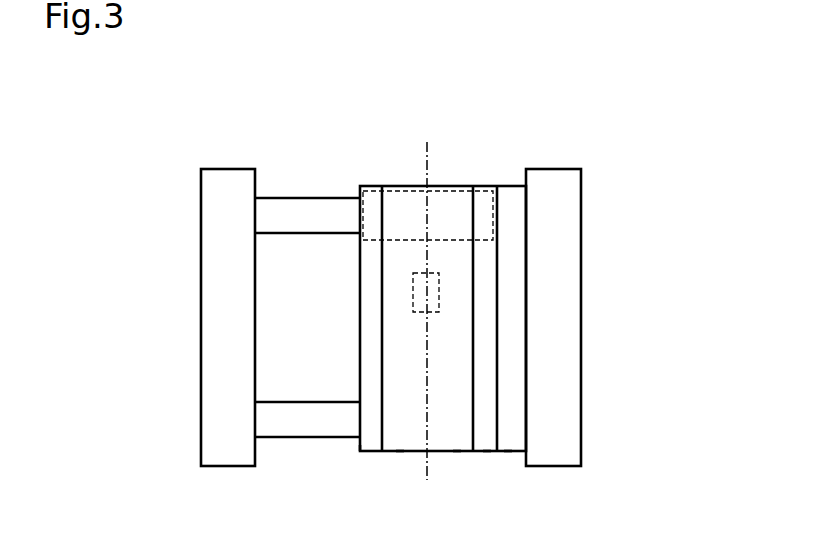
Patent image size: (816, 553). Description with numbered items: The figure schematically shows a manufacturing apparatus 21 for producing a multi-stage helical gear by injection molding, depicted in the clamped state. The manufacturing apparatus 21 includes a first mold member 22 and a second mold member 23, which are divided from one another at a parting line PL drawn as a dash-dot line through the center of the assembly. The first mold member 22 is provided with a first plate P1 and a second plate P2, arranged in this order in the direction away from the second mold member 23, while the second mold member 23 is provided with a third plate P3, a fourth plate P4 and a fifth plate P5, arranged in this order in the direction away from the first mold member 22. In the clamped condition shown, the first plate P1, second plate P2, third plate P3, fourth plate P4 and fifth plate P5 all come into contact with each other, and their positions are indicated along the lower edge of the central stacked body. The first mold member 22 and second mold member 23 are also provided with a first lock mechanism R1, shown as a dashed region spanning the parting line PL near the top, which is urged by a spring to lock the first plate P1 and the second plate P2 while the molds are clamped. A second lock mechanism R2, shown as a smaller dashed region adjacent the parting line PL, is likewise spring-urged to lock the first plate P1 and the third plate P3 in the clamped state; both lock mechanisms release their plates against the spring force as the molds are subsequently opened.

The manufacturing apparatus 21 is at (446, 315).
The first mold member 22 is at (200, 148).
The second mold member 23 is at (580, 148).
The first lock mechanism R1 is at (400, 187).
The second lock mechanism R2 is at (412, 301).
The parting line PL is at (426, 327).
The first plate P1 is at (400, 452).
The second plate P2 is at (365, 454).
The third plate P3 is at (457, 452).
The fourth plate P4 is at (487, 452).
The fifth plate P5 is at (508, 452).